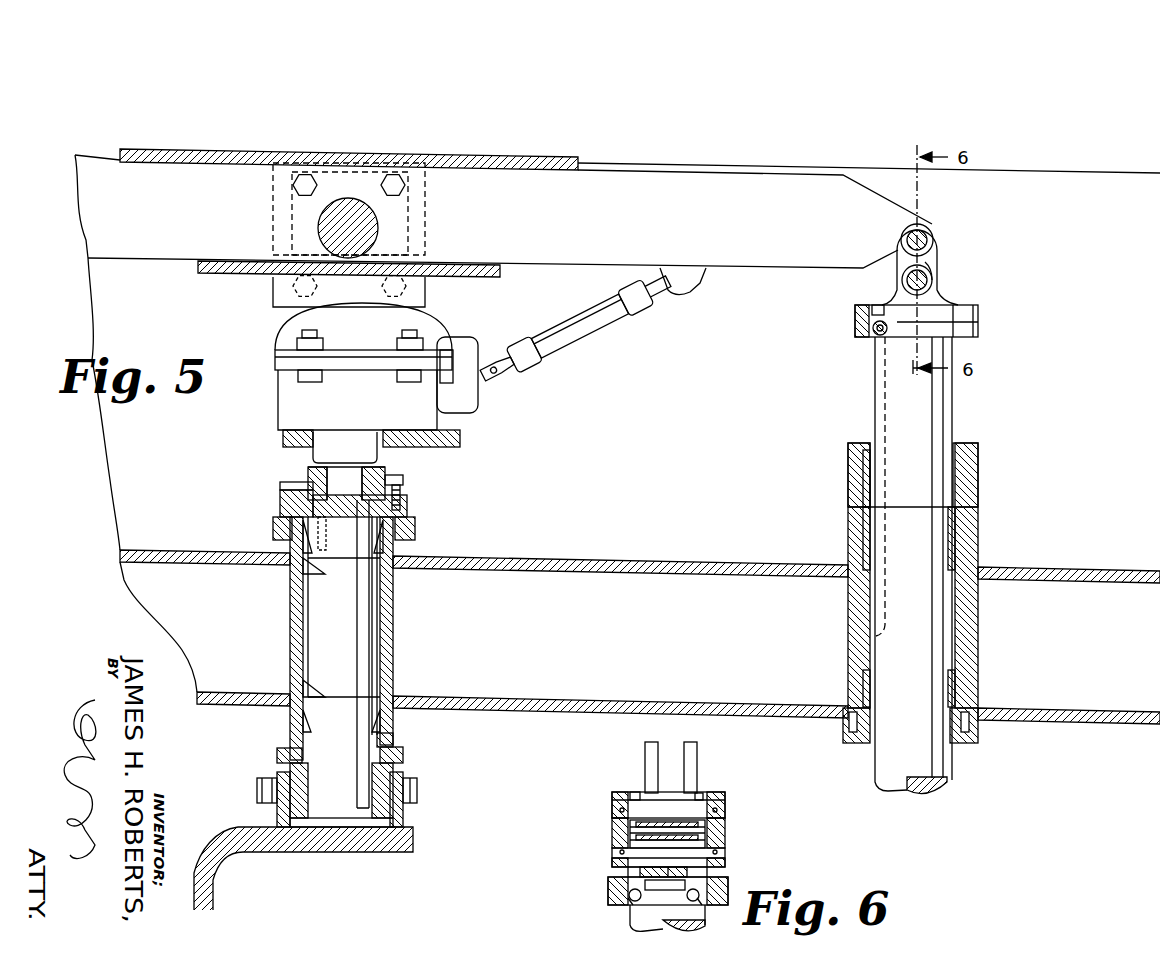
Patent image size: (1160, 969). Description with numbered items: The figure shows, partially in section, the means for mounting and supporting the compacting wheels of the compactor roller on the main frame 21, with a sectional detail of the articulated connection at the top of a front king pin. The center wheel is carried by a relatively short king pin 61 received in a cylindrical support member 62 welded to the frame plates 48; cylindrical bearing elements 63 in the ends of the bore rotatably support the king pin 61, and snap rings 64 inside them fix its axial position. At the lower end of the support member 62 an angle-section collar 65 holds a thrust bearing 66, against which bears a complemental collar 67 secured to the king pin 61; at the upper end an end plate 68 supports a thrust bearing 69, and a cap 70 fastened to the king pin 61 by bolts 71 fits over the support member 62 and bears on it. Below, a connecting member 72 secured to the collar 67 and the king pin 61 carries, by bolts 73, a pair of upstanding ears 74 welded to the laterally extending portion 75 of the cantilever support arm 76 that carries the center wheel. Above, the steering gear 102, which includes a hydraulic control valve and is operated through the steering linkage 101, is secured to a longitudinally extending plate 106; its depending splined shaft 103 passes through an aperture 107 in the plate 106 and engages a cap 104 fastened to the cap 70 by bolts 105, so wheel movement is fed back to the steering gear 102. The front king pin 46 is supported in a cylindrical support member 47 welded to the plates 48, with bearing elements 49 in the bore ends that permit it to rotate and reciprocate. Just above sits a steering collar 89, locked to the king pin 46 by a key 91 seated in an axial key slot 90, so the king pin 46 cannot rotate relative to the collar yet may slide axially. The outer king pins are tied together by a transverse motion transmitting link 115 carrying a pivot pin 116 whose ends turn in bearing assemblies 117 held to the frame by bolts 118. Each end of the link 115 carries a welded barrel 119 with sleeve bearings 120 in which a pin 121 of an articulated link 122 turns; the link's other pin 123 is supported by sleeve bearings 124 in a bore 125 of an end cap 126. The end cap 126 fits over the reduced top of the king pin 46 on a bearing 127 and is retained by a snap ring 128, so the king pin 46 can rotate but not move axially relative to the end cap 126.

In FIG. 5, the main frame 21 is at (1159, 225).
In FIG. 5, the king pin 46 is at (937, 410).
In FIG. 6, the king pin 46 is at (700, 920).
In FIG. 5, the support member 47 is at (978, 546).
In FIG. 5, the plates 48 is at (1120, 712).
In FIG. 5, the bearing elements 49 is at (955, 530).
In FIG. 5, the king pin 61 is at (362, 623).
In FIG. 5, the support member 62 is at (393, 589).
In FIG. 5, the bearing elements 63 is at (393, 550).
In FIG. 5, the snap rings 64 is at (325, 574).
In FIG. 5, the collar 65 is at (392, 737).
In FIG. 5, the thrust bearing 66 is at (400, 752).
In FIG. 5, the collar 67 is at (280, 755).
In FIG. 5, the end plate 68 is at (415, 528).
In FIG. 5, the thrust bearing 69 is at (407, 515).
In FIG. 5, the cap 70 is at (290, 506).
In FIG. 5, the bolts 71 is at (298, 490).
In FIG. 5, the connecting member 72 is at (393, 775).
In FIG. 5, the bolts 73 is at (417, 790).
In FIG. 5, the upstanding ears 74 is at (283, 818).
In FIG. 5, the laterally extending portion 75 is at (318, 840).
In FIG. 5, the cantilever support arm 76 is at (213, 850).
In FIG. 5, the steering collar 89 is at (973, 468).
In FIG. 5, the key slot 90 is at (880, 383).
In FIG. 5, the key 91 is at (868, 470).
In FIG. 5, the steering linkage 101 is at (590, 330).
In FIG. 5, the steering gear 102 is at (283, 337).
In FIG. 5, the splined shaft 103 is at (325, 487).
In FIG. 5, the cap 104 is at (340, 477).
In FIG. 5, the bolts 105 is at (402, 482).
In FIG. 5, the plate 106 is at (287, 437).
In FIG. 5, the aperture 107 is at (307, 428).
In FIG. 5, the motion transmitting link 115 is at (118, 247).
In FIG. 6, the motion transmitting link 115 is at (692, 748).
In FIG. 5, the pivot pin 116 is at (335, 228).
In FIG. 5, the bearing assembly 117 is at (412, 292).
In FIG. 5, the bolts 118 is at (290, 282).
In FIG. 6, the barrel 119 is at (700, 797).
In FIG. 6, the sleeve bearings 120 is at (636, 793).
In FIG. 5, the pin 121 is at (925, 233).
In FIG. 6, the pin 121 is at (725, 805).
In FIG. 5, the link 122 is at (947, 256).
In FIG. 6, the link 122 is at (735, 822).
In FIG. 5, the pin 123 is at (932, 281).
In FIG. 6, the pin 123 is at (720, 848).
In FIG. 6, the sleeve bearings 124 is at (635, 876).
In FIG. 6, the bore 125 is at (663, 836).
In FIG. 5, the end cap 126 is at (975, 313).
In FIG. 6, the end cap 126 is at (727, 877).
In FIG. 5, the bearing 127 is at (880, 330).
In FIG. 6, the bearing 127 is at (632, 906).
In FIG. 6, the snap ring 128 is at (635, 887).